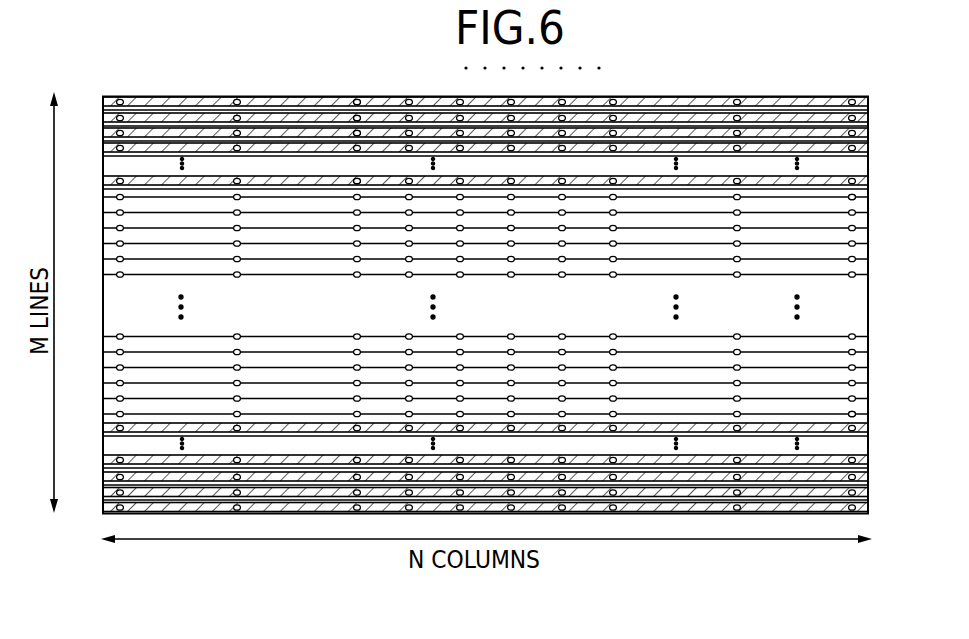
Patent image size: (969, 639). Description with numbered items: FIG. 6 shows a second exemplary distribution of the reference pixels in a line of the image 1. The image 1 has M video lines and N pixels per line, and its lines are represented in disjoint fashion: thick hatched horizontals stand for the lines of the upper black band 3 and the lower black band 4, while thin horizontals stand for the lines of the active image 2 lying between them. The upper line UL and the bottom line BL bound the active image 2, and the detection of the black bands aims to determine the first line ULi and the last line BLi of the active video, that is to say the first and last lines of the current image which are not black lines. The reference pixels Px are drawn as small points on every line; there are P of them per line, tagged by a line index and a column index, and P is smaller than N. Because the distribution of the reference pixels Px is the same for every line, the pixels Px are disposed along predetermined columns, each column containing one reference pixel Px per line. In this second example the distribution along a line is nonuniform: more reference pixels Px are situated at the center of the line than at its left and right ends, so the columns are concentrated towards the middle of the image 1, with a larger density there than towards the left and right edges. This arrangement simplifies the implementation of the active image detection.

The image 1 is at (496, 273).
The active image 2 is at (484, 304).
The upper black band 3 is at (465, 110).
The lower black band 4 is at (97, 420).
The upper line UL is at (105, 199).
The bottom line BL is at (105, 411).
The first line of the active video ULi is at (854, 195).
The last line of the active video BLi is at (875, 434).
The reference pixel Px is at (356, 179).